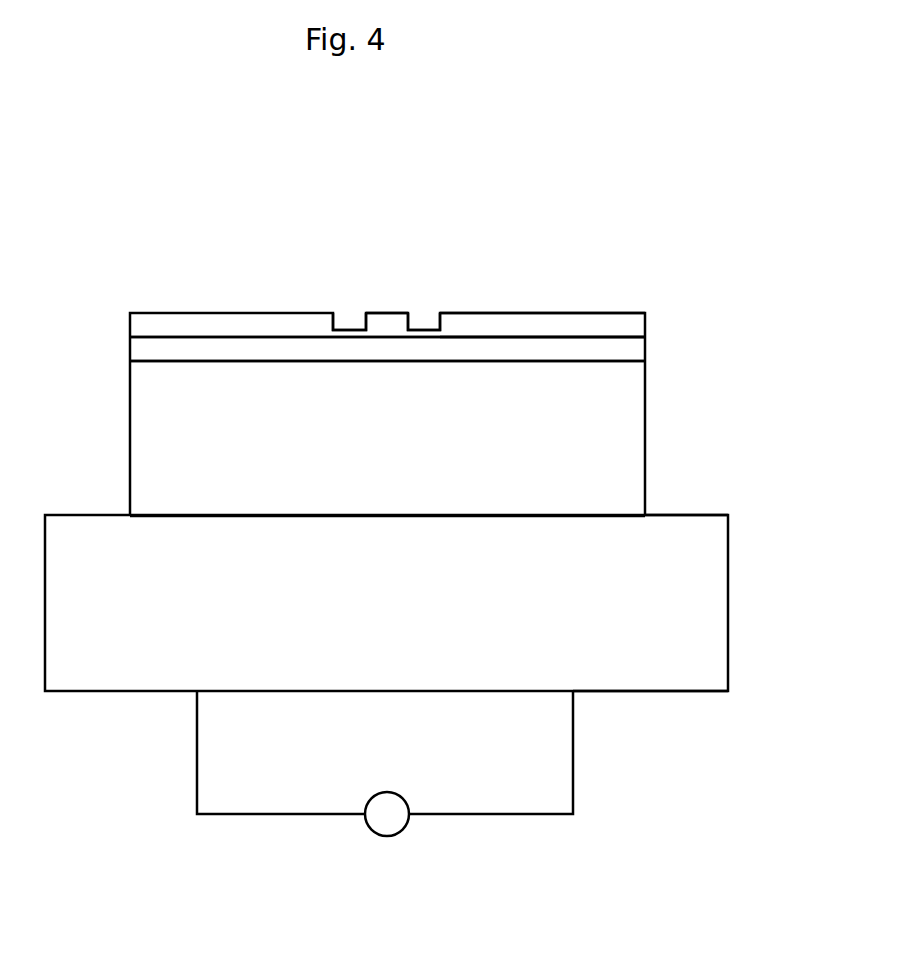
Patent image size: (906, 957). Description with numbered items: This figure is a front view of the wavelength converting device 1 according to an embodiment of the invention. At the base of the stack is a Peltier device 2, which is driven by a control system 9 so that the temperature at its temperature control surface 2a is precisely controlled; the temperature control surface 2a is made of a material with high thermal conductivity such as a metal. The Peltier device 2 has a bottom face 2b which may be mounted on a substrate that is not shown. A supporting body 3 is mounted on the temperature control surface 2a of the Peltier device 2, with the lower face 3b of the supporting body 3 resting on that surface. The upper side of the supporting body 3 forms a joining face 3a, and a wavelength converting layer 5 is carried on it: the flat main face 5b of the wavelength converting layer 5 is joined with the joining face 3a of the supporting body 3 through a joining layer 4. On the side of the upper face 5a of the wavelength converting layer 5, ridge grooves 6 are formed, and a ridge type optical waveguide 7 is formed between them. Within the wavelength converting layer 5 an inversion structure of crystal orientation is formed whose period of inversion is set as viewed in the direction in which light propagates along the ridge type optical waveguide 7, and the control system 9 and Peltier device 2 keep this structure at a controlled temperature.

The wavelength converting device 1 is at (652, 259).
The Peltier device 2 is at (730, 563).
The temperature control surface 2a is at (678, 514).
The bottom face 2b is at (645, 694).
The supporting body 3 is at (628, 428).
The joining face 3a is at (473, 361).
The lower surface of semiconductor layer 3b is at (532, 517).
The joining layer 4 is at (570, 350).
The wavelength converting layer 5 is at (605, 345).
The upper face 5a is at (515, 312).
The main face 5b is at (537, 340).
The ridge groove 6 is at (355, 328).
The ridge type optical waveguide 7 is at (395, 312).
The control system 9 is at (393, 805).